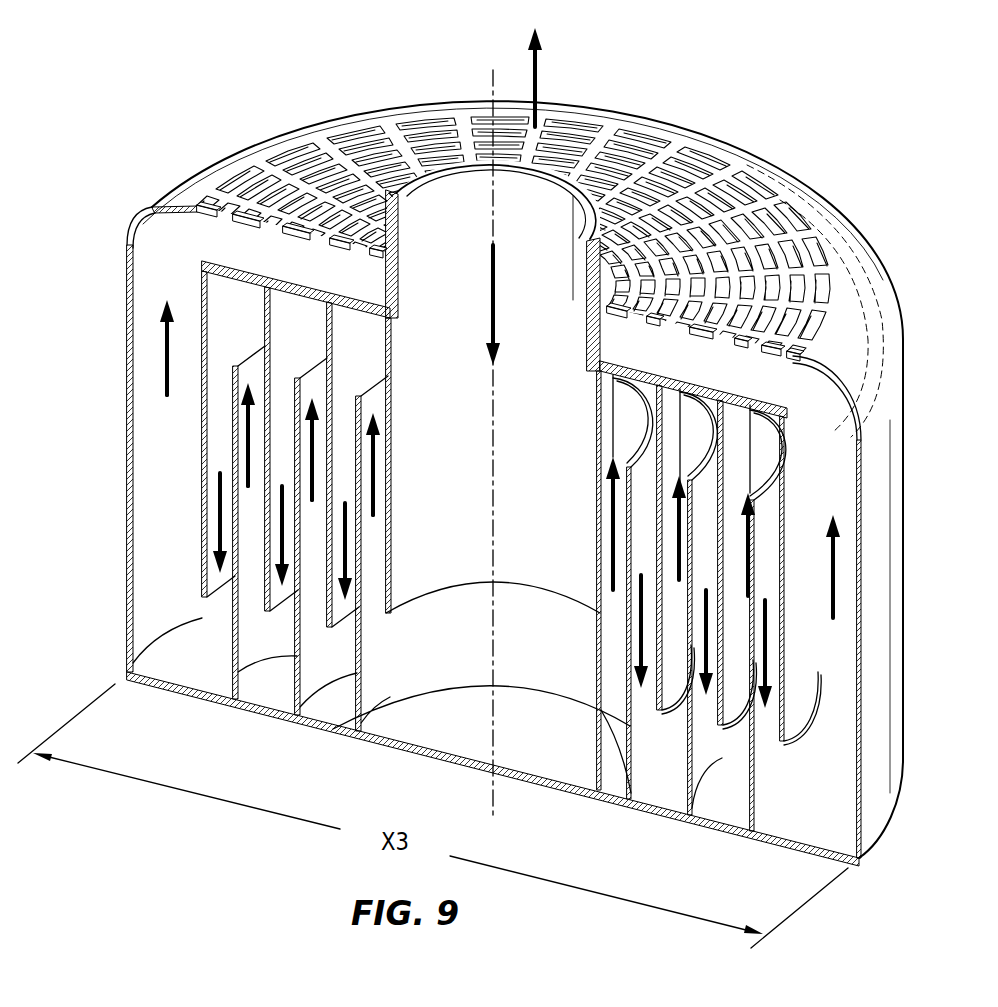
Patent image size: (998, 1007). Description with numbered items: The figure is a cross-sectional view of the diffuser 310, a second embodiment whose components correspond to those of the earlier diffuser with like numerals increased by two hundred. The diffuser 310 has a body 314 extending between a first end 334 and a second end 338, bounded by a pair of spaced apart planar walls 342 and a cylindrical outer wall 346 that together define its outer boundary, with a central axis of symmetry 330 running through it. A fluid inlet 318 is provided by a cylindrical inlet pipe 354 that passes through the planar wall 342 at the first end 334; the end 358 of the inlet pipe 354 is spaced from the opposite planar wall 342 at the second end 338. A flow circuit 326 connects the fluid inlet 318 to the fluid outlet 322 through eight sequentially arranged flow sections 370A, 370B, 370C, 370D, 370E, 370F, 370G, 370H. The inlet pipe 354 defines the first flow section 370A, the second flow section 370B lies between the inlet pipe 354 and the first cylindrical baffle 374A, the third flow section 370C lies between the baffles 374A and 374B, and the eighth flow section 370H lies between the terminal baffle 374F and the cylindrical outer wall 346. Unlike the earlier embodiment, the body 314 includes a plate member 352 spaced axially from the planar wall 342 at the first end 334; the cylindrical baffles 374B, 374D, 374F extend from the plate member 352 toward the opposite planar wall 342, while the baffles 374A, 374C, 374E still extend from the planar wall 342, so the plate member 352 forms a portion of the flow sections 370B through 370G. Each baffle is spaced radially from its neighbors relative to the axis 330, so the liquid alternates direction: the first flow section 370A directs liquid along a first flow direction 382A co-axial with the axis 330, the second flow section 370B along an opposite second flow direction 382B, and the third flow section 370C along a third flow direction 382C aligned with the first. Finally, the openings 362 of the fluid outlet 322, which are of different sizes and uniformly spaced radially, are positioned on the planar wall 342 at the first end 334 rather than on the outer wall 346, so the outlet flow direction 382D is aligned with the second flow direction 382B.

The diffuser 310 is at (904, 190).
The body 314 is at (883, 748).
The fluid inlet 318 is at (456, 564).
The fluid outlet 322 is at (805, 208).
The flow circuit 326 is at (795, 812).
The central axis of symmetry 330 is at (488, 97).
The first end 334 is at (178, 206).
The second end 338 is at (125, 680).
The planar wall 342 is at (682, 140).
The cylindrical outer wall 346 is at (886, 566).
The plate member 352 is at (778, 334).
The inlet pipe 354 is at (540, 162).
The end of inlet pipe 358 is at (601, 808).
The openings 362 is at (773, 200).
The first flow section 370A is at (549, 539).
The second flow section 370B is at (374, 610).
The third flow section 370C is at (343, 400).
The fourth flow section 370D is at (313, 610).
The fifth flow section 370E is at (282, 388).
The sixth flow section 370F is at (252, 602).
The seventh flow section 370G is at (220, 376).
The eighth flow section 370H is at (160, 243).
The first cylindrical baffle 374A is at (367, 635).
The second cylindrical baffle 374B is at (784, 408).
The third cylindrical baffle 374C is at (722, 745).
The fourth cylindrical baffle 374D is at (736, 430).
The fifth cylindrical baffle 374E is at (234, 600).
The sixth cylindrical baffle 374F is at (803, 490).
The first flow direction 382A is at (492, 280).
The second flow direction 382B is at (373, 445).
The third flow direction 382C is at (345, 545).
The outlet flow direction 382D is at (537, 100).